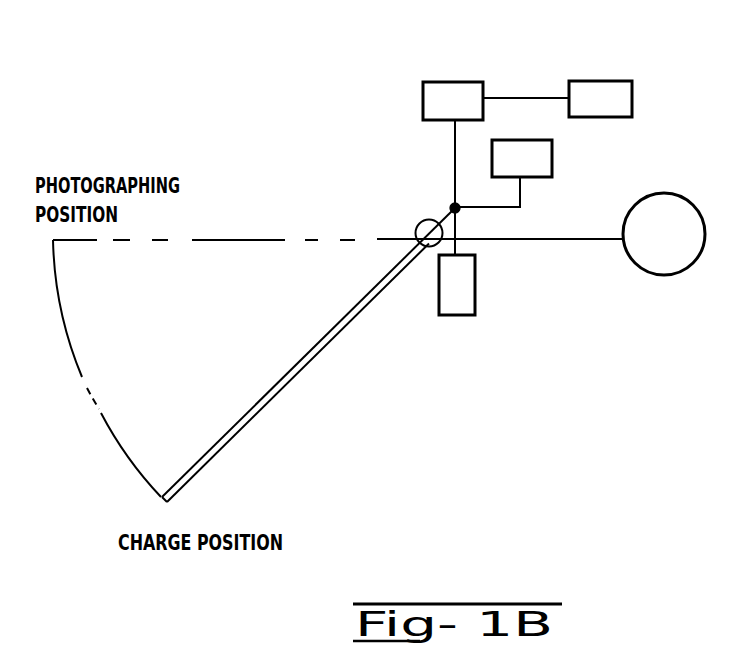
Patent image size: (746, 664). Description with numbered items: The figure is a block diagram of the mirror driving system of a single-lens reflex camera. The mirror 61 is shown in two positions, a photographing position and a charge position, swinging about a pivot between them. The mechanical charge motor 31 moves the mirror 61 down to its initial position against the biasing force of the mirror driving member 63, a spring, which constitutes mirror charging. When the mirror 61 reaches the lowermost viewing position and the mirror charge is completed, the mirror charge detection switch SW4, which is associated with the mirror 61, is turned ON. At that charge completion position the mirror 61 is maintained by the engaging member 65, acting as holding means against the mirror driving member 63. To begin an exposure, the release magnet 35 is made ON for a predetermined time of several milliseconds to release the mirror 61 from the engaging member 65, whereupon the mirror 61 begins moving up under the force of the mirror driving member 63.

The engaging member 65 is at (435, 82).
The release magnet 35 is at (593, 80).
The mirror charge detection switch SW4 is at (552, 158).
The mirror driving member 63 is at (457, 315).
The mechanical charge motor 31 is at (690, 270).
The mirror 61 is at (232, 240).